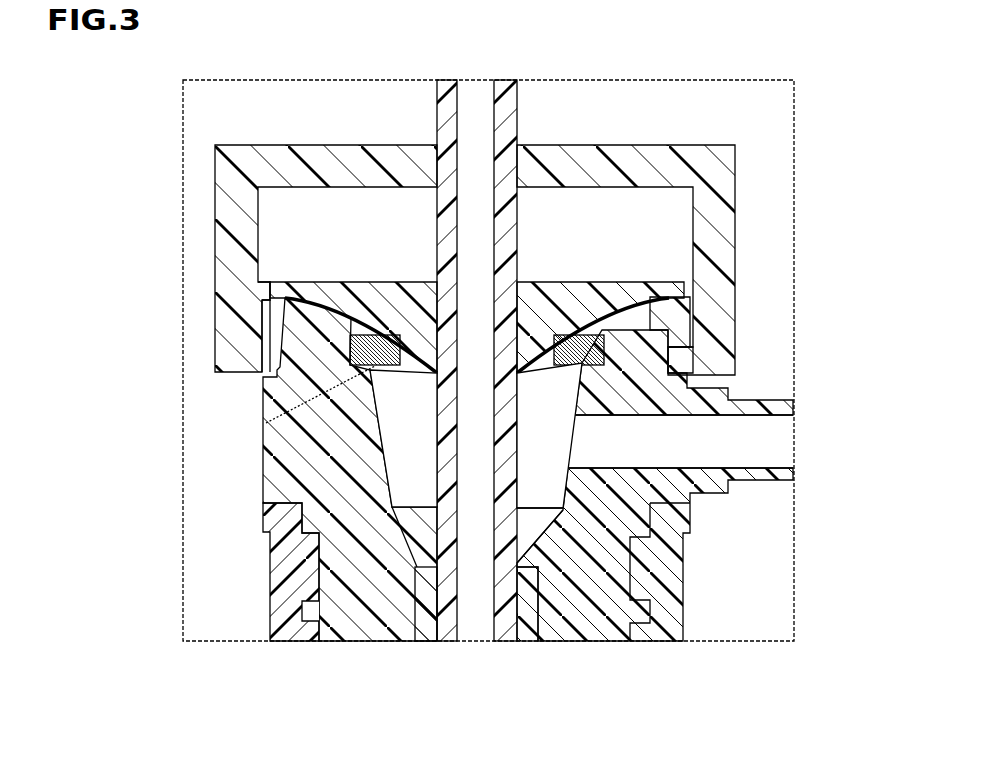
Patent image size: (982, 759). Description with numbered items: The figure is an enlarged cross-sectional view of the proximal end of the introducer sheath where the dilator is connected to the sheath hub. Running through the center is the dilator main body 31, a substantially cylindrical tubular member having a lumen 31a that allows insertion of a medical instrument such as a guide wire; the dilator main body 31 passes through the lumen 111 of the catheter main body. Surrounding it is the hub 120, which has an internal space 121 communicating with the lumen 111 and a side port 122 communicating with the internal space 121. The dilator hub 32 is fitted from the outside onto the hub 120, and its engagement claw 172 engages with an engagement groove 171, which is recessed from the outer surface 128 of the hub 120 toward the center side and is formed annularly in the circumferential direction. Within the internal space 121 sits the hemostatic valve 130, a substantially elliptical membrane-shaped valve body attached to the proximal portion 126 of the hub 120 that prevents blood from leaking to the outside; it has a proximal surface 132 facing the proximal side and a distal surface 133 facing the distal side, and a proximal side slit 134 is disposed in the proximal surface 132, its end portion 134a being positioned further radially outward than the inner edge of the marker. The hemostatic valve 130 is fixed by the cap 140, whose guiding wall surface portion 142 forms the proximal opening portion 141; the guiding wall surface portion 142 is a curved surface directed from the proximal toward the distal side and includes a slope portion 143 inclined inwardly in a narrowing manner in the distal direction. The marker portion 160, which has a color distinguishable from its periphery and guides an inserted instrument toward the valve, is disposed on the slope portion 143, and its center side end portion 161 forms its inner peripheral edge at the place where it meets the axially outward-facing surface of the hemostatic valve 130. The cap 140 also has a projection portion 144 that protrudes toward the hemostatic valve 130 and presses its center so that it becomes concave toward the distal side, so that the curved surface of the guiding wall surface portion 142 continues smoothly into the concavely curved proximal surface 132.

The dilator main body 31 is at (534, 108).
The lumen 31a is at (474, 616).
The dilator hub 32 is at (763, 238).
The lumen 111 is at (418, 641).
The hub 120 is at (284, 469).
The internal space 121 is at (541, 483).
The side port 122 is at (730, 432).
The proximal portion 126 is at (275, 297).
The outer surface 128 is at (263, 470).
The hemostatic valve 130 is at (421, 387).
The proximal surface 132 is at (527, 343).
The distal surface 133 is at (522, 392).
The proximal side slit 134 is at (297, 504).
The end portion 134a is at (266, 423).
The cap 140 is at (665, 266).
The proximal opening portion 141 is at (527, 266).
The guiding wall surface portion 142 is at (590, 318).
The slope portion 143 is at (335, 301).
The projection portion 144 is at (525, 373).
The marker portion 160 is at (385, 304).
The center side end portion 161 is at (426, 337).
The engagement groove 171 is at (262, 369).
The engagement claw 172 is at (702, 318).